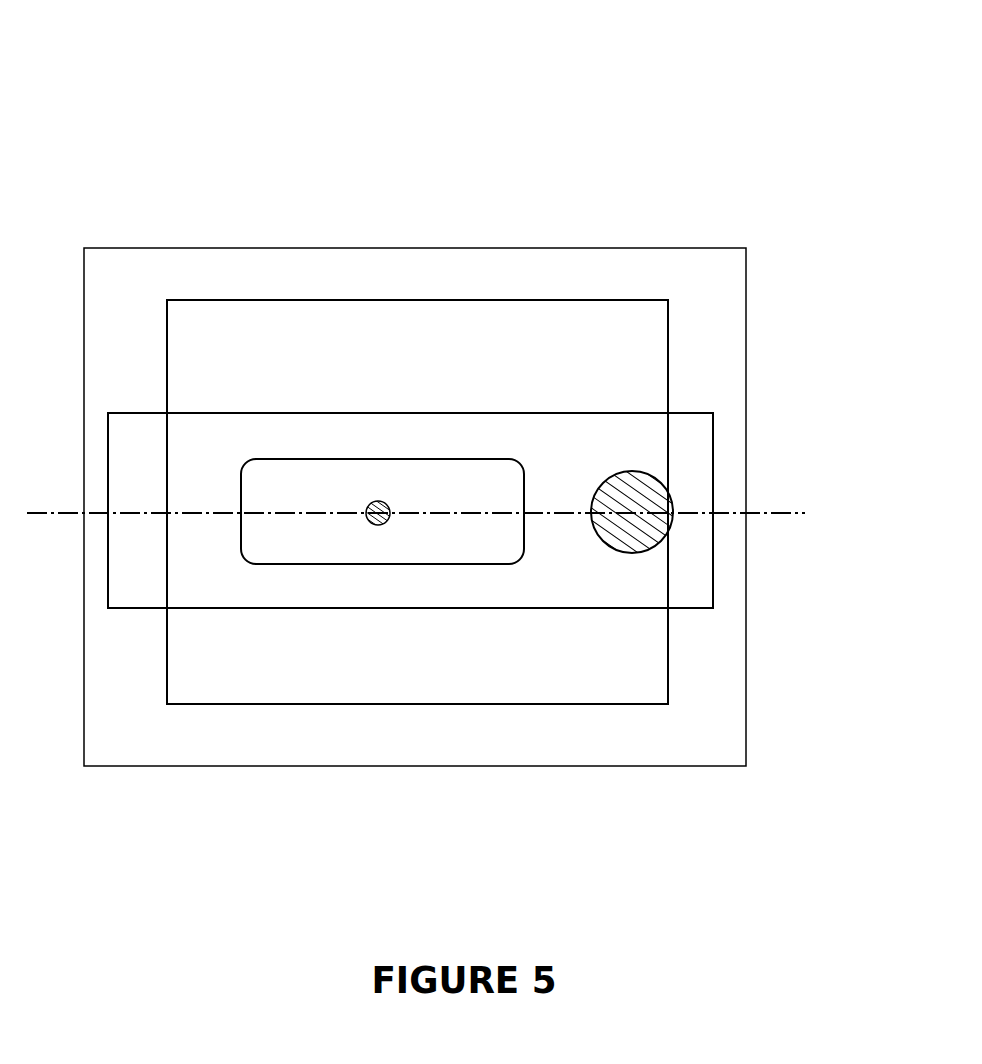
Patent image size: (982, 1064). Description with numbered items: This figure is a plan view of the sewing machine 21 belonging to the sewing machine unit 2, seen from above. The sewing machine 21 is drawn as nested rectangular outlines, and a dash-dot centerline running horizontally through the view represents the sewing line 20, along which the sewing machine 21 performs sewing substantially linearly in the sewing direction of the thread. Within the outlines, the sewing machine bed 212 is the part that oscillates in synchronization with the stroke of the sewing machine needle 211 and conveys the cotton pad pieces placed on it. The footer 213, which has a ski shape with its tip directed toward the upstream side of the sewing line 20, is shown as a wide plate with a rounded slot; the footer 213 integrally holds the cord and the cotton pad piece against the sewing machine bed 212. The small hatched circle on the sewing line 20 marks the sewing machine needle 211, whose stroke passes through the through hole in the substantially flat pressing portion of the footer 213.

The sewing machine unit 2 is at (460, 193).
The sewing line 20 is at (767, 508).
The sewing machine 21 is at (590, 235).
The sewing machine needle 211 is at (380, 526).
The sewing machine bed 212 is at (638, 343).
The footer 213 is at (540, 587).